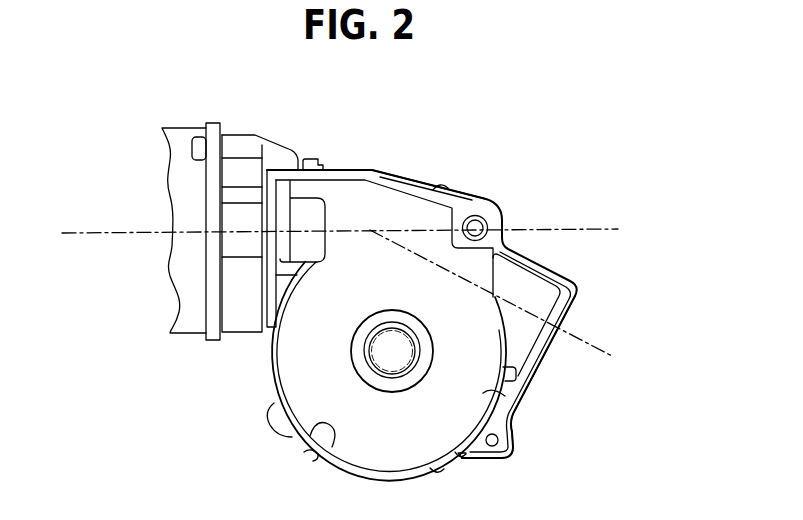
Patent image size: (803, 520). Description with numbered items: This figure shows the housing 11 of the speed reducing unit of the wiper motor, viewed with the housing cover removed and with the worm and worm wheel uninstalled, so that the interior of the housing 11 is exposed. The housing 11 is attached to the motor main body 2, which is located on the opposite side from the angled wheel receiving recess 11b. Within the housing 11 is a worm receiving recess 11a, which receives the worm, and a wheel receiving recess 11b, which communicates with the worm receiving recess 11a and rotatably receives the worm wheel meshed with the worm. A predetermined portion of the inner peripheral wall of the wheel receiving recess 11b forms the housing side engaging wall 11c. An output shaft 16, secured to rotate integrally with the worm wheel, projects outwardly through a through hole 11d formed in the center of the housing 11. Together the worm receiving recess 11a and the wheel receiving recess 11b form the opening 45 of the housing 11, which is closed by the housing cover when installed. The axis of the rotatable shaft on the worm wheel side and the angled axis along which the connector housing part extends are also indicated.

The motor main body 2 is at (190, 340).
The housing 11 is at (452, 191).
The worm receiving recess 11a is at (390, 203).
The wheel receiving recess 11b is at (520, 408).
The housing side engaging wall 11c is at (532, 353).
The through hole 11d is at (400, 328).
The output shaft 16 is at (370, 355).
The opening 45 is at (302, 438).